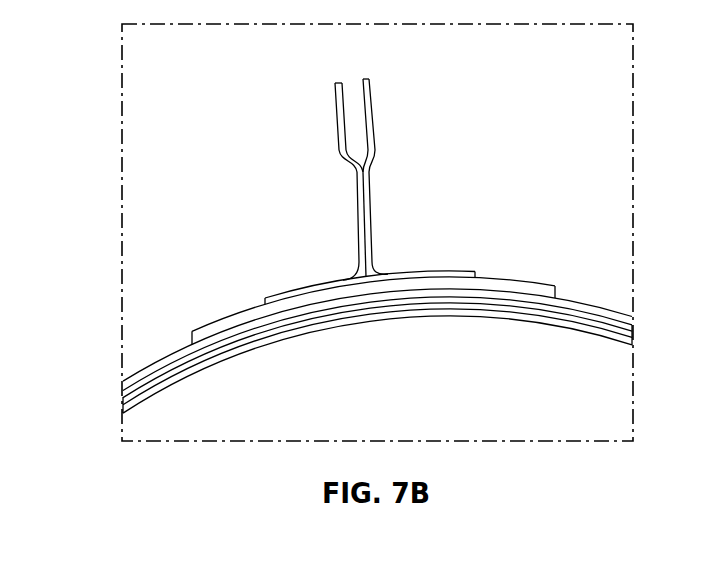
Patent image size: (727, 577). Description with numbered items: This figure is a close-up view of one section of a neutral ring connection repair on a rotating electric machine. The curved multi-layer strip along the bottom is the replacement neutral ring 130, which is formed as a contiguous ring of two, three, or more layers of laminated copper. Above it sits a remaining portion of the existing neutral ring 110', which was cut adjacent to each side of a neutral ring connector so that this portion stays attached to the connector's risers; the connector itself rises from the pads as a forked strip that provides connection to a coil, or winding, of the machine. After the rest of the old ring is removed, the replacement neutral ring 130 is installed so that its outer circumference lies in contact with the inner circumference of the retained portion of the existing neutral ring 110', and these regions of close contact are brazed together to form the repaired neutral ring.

The existing neutral ring 110' is at (385, 281).
The replacement neutral ring 130 is at (122, 382).